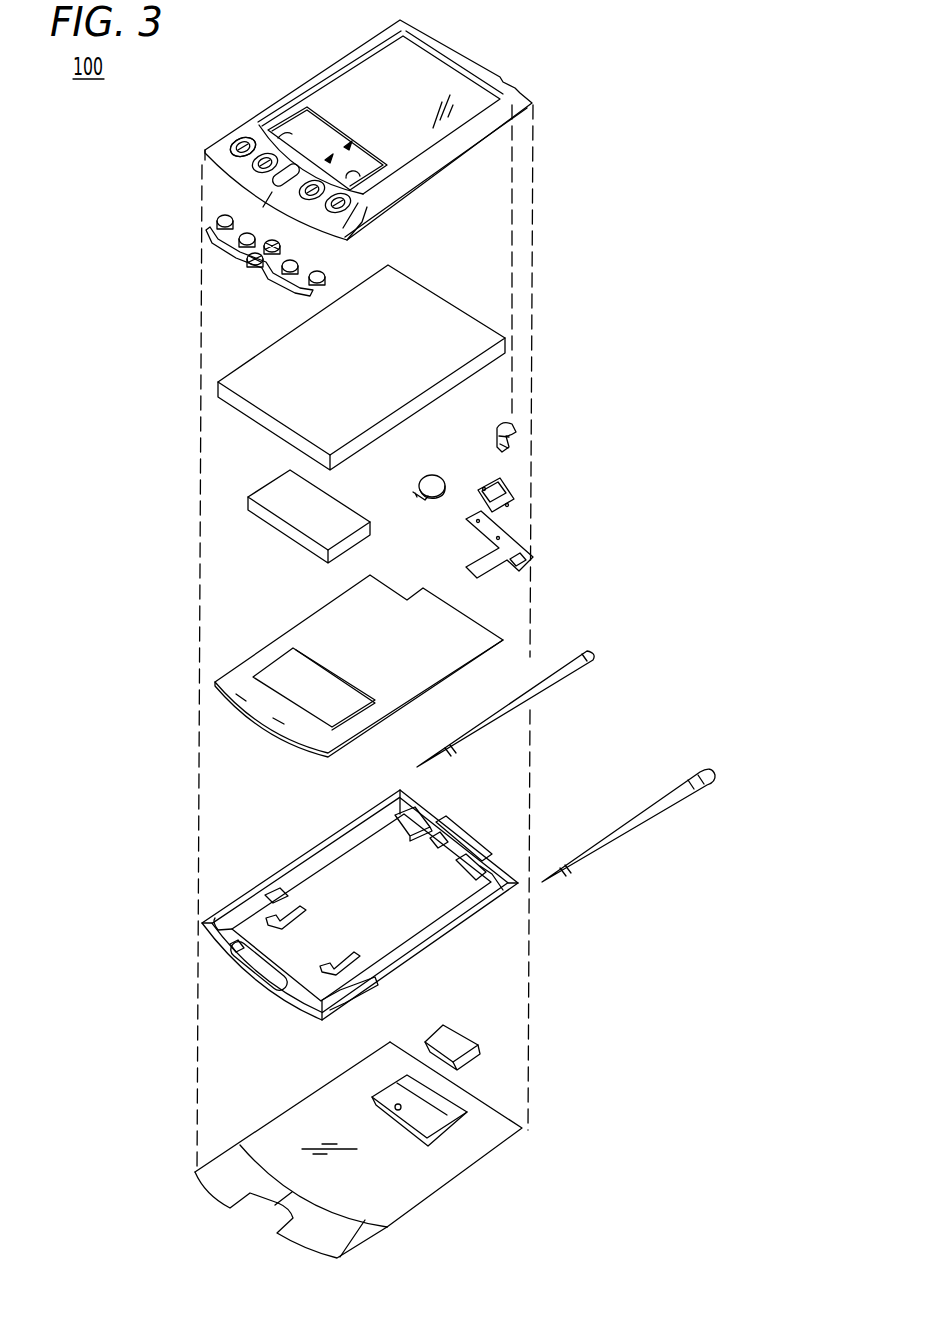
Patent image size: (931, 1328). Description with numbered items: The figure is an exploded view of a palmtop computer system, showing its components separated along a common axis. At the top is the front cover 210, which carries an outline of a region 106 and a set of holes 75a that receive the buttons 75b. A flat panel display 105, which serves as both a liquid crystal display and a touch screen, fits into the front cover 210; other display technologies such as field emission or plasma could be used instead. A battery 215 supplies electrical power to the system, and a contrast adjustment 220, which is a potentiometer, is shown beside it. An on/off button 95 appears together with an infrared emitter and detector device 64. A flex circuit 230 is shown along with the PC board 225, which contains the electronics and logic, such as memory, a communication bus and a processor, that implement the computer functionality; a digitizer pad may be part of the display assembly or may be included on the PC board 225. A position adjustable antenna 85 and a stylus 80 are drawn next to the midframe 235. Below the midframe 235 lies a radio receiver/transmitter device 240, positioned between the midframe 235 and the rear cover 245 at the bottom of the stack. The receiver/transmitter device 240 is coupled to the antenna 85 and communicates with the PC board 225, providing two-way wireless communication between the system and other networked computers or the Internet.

The front cover 210 is at (535, 101).
The region 106 is at (300, 127).
The holes 75a is at (240, 143).
The buttons 75b is at (217, 222).
The flat panel display 105 is at (224, 378).
The battery 215 is at (252, 490).
The contrast adjustment 220 is at (428, 478).
The on/off button 95 is at (520, 428).
The infrared emitter and detector device 64 is at (508, 493).
The flex circuit 230 is at (523, 545).
The PC board 225 is at (228, 668).
The position adjustable antenna 85 is at (593, 653).
The stylus 80 is at (709, 766).
The midframe 235 is at (489, 919).
The radio receiver/transmitter device 240 is at (459, 1040).
The rear cover 245 is at (488, 1157).